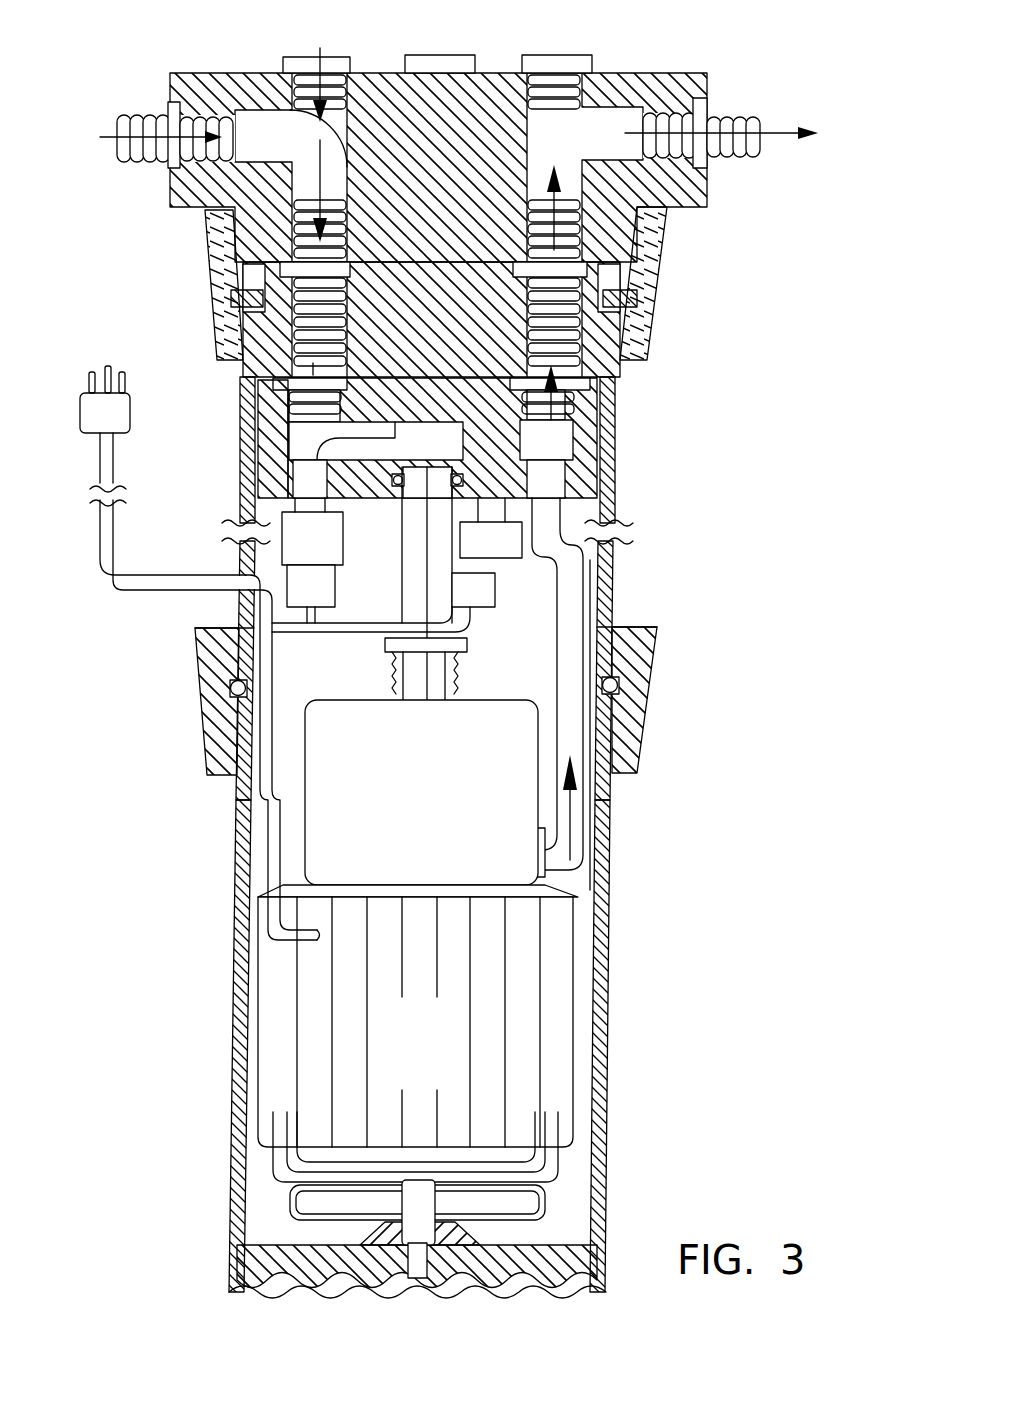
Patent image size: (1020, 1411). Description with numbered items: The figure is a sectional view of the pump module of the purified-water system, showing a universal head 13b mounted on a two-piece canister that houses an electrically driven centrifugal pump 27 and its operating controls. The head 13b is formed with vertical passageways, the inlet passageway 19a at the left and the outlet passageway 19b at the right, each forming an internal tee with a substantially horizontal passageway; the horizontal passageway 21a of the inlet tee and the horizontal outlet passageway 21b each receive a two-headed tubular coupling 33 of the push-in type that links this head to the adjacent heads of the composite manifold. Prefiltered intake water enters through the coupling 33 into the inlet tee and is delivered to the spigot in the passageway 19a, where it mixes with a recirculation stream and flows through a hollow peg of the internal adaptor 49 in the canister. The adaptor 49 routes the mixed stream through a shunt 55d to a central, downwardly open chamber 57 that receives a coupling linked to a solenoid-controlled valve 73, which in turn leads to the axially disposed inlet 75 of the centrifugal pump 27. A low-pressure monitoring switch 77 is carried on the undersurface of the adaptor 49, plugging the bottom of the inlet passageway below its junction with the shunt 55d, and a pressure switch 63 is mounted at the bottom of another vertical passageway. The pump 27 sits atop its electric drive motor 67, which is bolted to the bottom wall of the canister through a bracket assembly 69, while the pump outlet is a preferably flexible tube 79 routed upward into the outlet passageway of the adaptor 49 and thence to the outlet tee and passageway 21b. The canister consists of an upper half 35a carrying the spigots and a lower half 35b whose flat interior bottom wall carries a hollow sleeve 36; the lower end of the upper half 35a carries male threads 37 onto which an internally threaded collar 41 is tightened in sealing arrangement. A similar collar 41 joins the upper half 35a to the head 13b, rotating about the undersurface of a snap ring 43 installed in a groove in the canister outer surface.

The pump module head 13b is at (187, 187).
The horizontal passageway of inlet tee 21a is at (247, 133).
The horizontal outlet passageway 21b is at (612, 130).
The inlet passageway 19a is at (325, 138).
The outlet passageway 19b is at (558, 137).
The tubular coupling 33 is at (173, 117).
The snap ring 43 is at (655, 315).
The adaptor 49 is at (273, 430).
The central chamber 57 is at (432, 451).
The shunt 55d is at (365, 448).
The low-pressure monitoring switch 77 is at (299, 549).
The pressure switch 63 is at (479, 554).
The solenoid-controlled valve 73 is at (437, 568).
The pump inlet 75 is at (448, 683).
The outlet tube 79 is at (573, 672).
The canister upper half 35a is at (613, 600).
The canister lower half 35b is at (607, 1007).
The male threads 37 is at (647, 638).
The threaded collar 41 is at (652, 693).
The centrifugal pump 27 is at (407, 829).
The electric drive motor 67 is at (405, 1071).
The bracket assembly 69 is at (548, 1197).
The sleeve 36 is at (440, 1197).